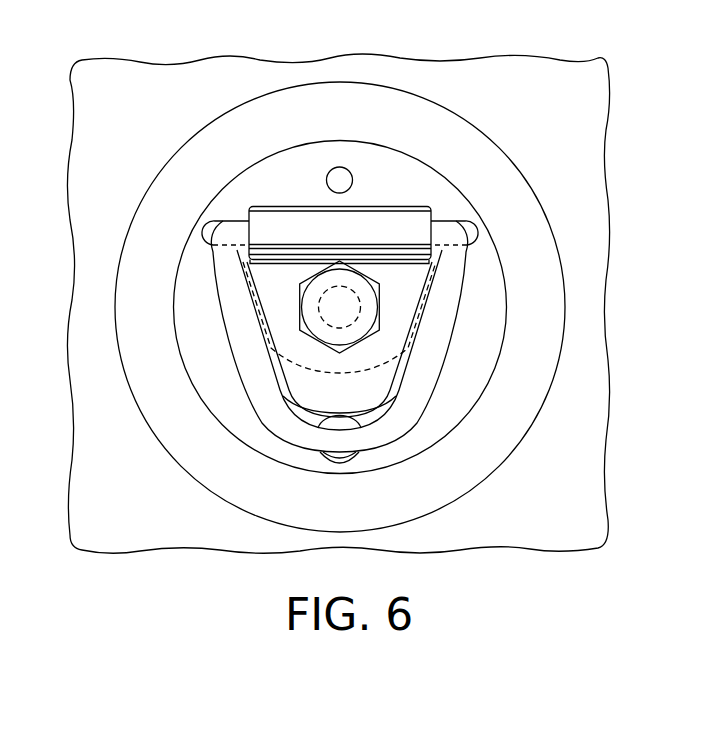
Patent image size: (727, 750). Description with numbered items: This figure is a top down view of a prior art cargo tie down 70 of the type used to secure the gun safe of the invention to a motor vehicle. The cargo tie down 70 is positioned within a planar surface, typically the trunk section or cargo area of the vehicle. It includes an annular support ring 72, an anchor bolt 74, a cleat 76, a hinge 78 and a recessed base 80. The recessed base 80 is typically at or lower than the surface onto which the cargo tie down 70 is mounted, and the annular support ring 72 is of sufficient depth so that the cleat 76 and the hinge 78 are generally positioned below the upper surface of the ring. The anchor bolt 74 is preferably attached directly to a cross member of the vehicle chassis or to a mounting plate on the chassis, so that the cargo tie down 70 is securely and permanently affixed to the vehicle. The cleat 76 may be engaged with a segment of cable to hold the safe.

The cargo tie down 70 is at (560, 158).
The annular support ring 72 is at (528, 253).
The anchor bolt 74 is at (367, 307).
The cleat 76 is at (437, 373).
The hinge 78 is at (373, 220).
The recessed base 80 is at (200, 337).